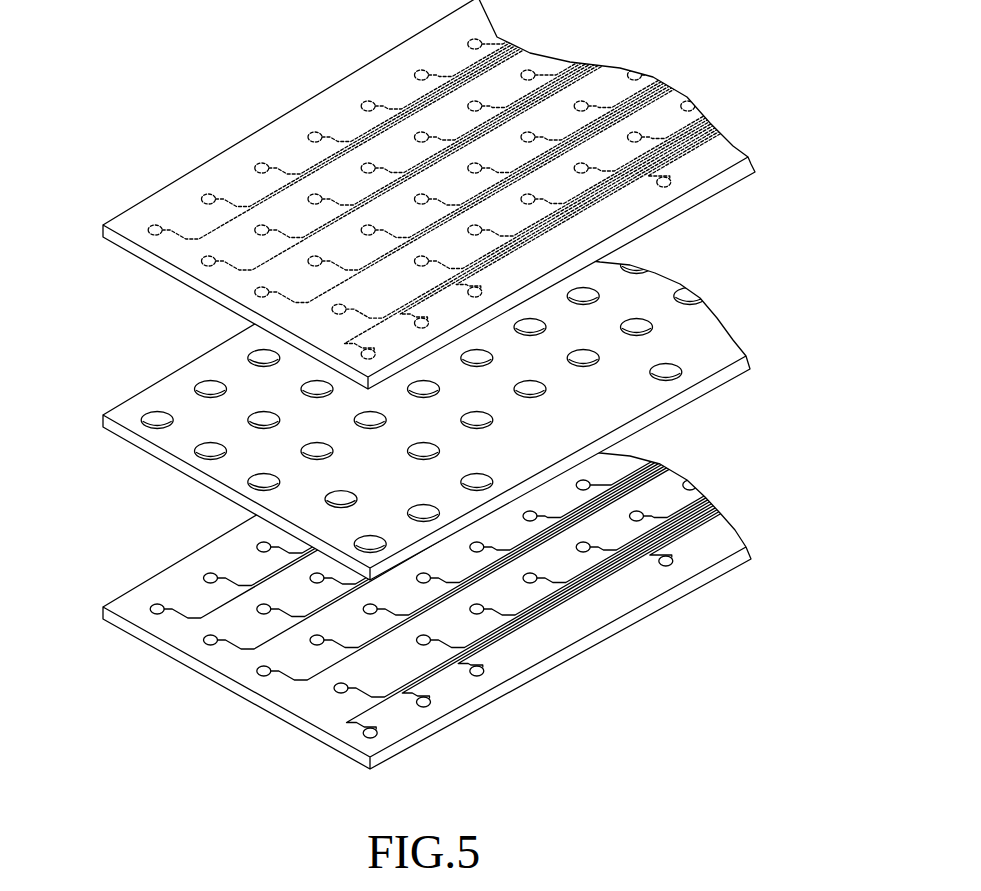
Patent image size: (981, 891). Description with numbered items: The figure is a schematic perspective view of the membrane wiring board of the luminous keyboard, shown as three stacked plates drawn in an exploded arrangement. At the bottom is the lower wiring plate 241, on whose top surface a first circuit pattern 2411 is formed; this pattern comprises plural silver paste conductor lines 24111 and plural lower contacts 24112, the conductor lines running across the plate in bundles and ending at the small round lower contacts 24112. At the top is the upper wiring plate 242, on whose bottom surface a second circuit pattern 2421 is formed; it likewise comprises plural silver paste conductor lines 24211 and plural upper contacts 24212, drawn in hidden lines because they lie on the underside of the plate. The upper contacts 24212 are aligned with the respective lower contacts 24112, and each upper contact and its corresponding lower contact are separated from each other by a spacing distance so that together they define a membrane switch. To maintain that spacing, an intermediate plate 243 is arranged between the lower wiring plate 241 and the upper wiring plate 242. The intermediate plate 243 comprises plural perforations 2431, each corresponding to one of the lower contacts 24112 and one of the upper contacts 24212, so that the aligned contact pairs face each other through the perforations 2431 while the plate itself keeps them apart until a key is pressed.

The lower wiring plate 241 is at (427, 579).
The first circuit pattern 2411 is at (426, 597).
The silver paste conductor lines 24111 is at (603, 583).
The lower contacts 24112 is at (263, 601).
The upper wiring plate 242 is at (462, 194).
The second circuit pattern 2421 is at (485, 189).
The silver paste conductor lines 24211 is at (700, 133).
The upper contacts 24212 is at (418, 70).
The intermediate plate 243 is at (452, 385).
The perforations 2431 is at (260, 412).